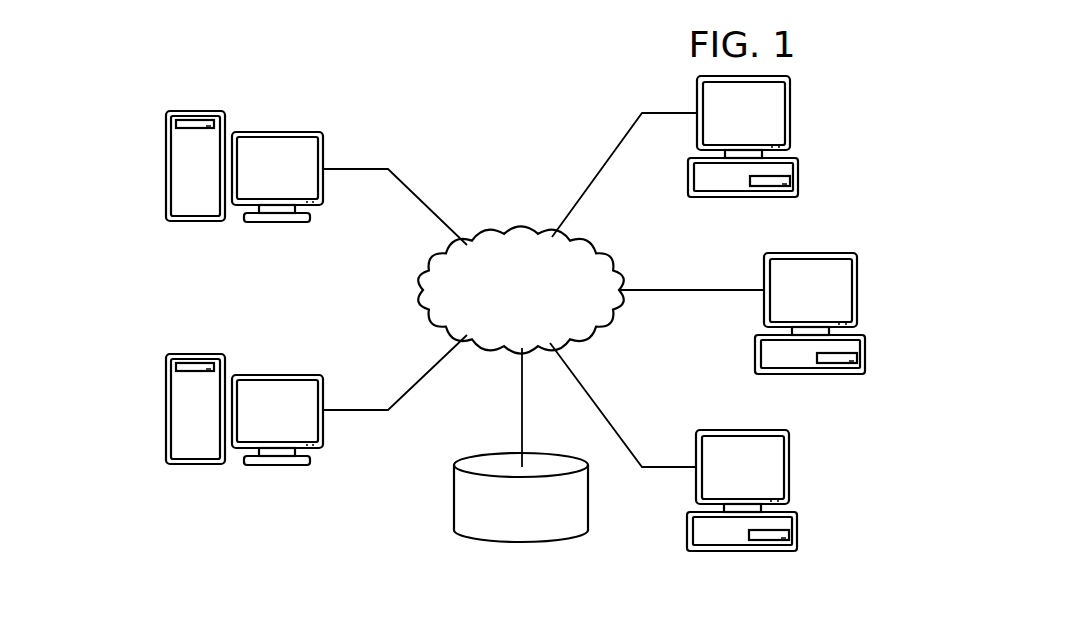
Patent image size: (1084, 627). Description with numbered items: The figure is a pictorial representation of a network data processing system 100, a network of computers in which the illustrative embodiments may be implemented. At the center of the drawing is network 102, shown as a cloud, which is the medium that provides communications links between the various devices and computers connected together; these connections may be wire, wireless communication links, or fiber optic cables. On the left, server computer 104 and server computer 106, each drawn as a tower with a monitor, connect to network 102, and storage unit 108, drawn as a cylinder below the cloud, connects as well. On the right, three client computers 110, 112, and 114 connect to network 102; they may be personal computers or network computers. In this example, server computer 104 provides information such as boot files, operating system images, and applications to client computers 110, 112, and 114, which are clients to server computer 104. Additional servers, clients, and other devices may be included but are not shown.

The network data processing system 100 is at (392, 82).
The network 102 is at (517, 230).
The server computer 104 is at (166, 165).
The server computer 106 is at (166, 409).
The storage unit 108 is at (454, 498).
The client computer 110 is at (798, 175).
The client computer 112 is at (865, 352).
The client computer 114 is at (797, 530).